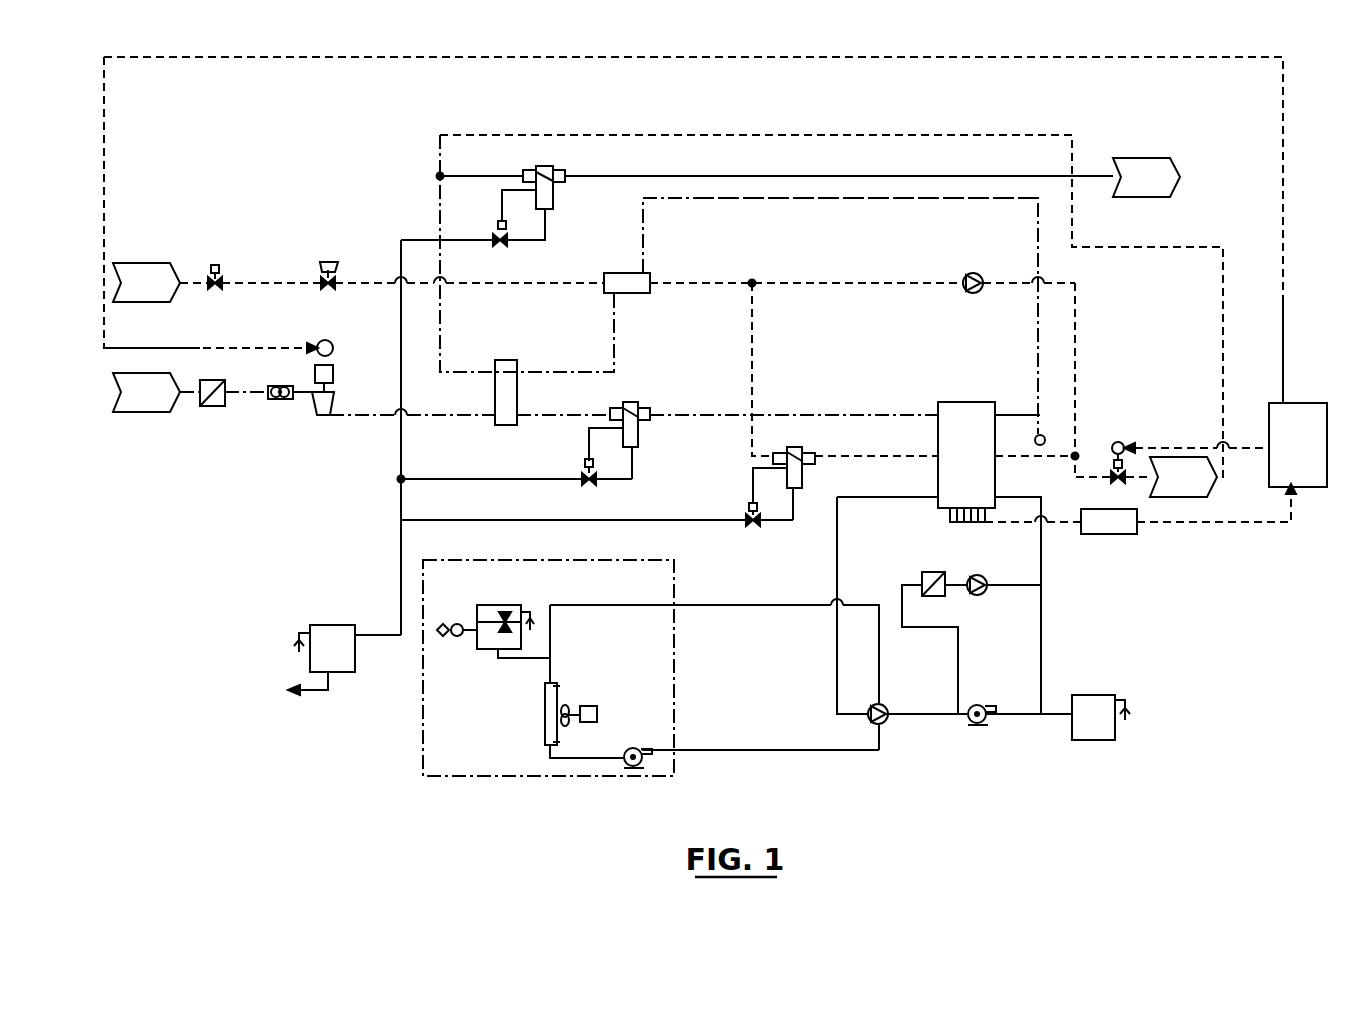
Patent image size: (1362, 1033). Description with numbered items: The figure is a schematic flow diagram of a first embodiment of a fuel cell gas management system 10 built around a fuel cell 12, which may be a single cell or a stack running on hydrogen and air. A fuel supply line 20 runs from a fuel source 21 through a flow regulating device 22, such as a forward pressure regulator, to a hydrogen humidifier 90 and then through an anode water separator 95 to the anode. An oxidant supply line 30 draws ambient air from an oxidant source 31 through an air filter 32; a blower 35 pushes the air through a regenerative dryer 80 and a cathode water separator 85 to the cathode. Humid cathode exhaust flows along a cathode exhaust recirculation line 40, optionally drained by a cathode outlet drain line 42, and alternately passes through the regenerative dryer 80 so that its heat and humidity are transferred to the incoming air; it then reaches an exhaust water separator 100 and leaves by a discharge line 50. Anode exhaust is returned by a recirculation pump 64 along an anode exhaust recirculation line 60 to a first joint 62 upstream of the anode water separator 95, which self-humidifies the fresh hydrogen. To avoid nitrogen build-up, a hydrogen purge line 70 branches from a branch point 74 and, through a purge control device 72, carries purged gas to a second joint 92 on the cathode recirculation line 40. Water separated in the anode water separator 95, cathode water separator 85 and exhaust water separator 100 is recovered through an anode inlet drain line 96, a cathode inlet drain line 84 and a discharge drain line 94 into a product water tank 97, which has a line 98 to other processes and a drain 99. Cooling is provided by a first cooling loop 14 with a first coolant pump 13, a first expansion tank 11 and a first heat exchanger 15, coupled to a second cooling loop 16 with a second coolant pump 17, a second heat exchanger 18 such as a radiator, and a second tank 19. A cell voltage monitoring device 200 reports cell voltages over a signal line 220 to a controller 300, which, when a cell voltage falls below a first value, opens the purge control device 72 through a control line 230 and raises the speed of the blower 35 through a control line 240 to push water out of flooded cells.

The fuel cell gas management system 10 is at (752, 116).
The first expansion tank 11 is at (1072, 730).
The fuel cell 12 is at (978, 402).
The first coolant pump 13 is at (980, 725).
The first cooling loop 14 is at (1042, 650).
The first heat exchanger 15 is at (882, 726).
The second cooling loop 16 is at (740, 752).
The second coolant pump 17 is at (640, 768).
The second heat exchanger 18 is at (545, 697).
The second tank 19 is at (490, 605).
The fuel supply line 20 is at (248, 280).
The fuel source 21 is at (165, 268).
The flow regulating device 22 is at (322, 272).
The oxidant supply line 30 is at (197, 400).
The oxidant source 31 is at (162, 385).
The air filter 32 is at (215, 406).
The blower 35 is at (320, 412).
The cathode exhaust recirculation line 40 is at (907, 195).
The cathode outlet drain line 42 is at (1046, 440).
The discharge line 50 is at (1155, 158).
The anode exhaust recirculation line 60 is at (1075, 335).
The first joint 62 is at (752, 283).
The recirculation pump 64 is at (983, 280).
The hydrogen purge line 70 is at (1222, 283).
The purge control device 72 is at (1128, 446).
The branch point 74 is at (1078, 456).
The regenerative dryer 80 is at (517, 362).
The cathode inlet drain line 84 is at (437, 480).
The cathode water separator 85 is at (638, 438).
The hydrogen humidifier 90 is at (650, 278).
The second joint 92 is at (438, 176).
The discharge drain line 94 is at (401, 452).
The anode water separator 95 is at (791, 446).
The anode inlet drain line 96 is at (768, 524).
The product water tank 97 is at (355, 670).
The line 98 is at (312, 692).
The drain 99 is at (292, 640).
The exhaust water separator 100 is at (548, 166).
The cell voltage monitoring device 200 is at (1115, 534).
The signal line 220 is at (1192, 524).
The control line 230 is at (1243, 447).
The control line 240 is at (1285, 255).
The controller 300 is at (1297, 403).